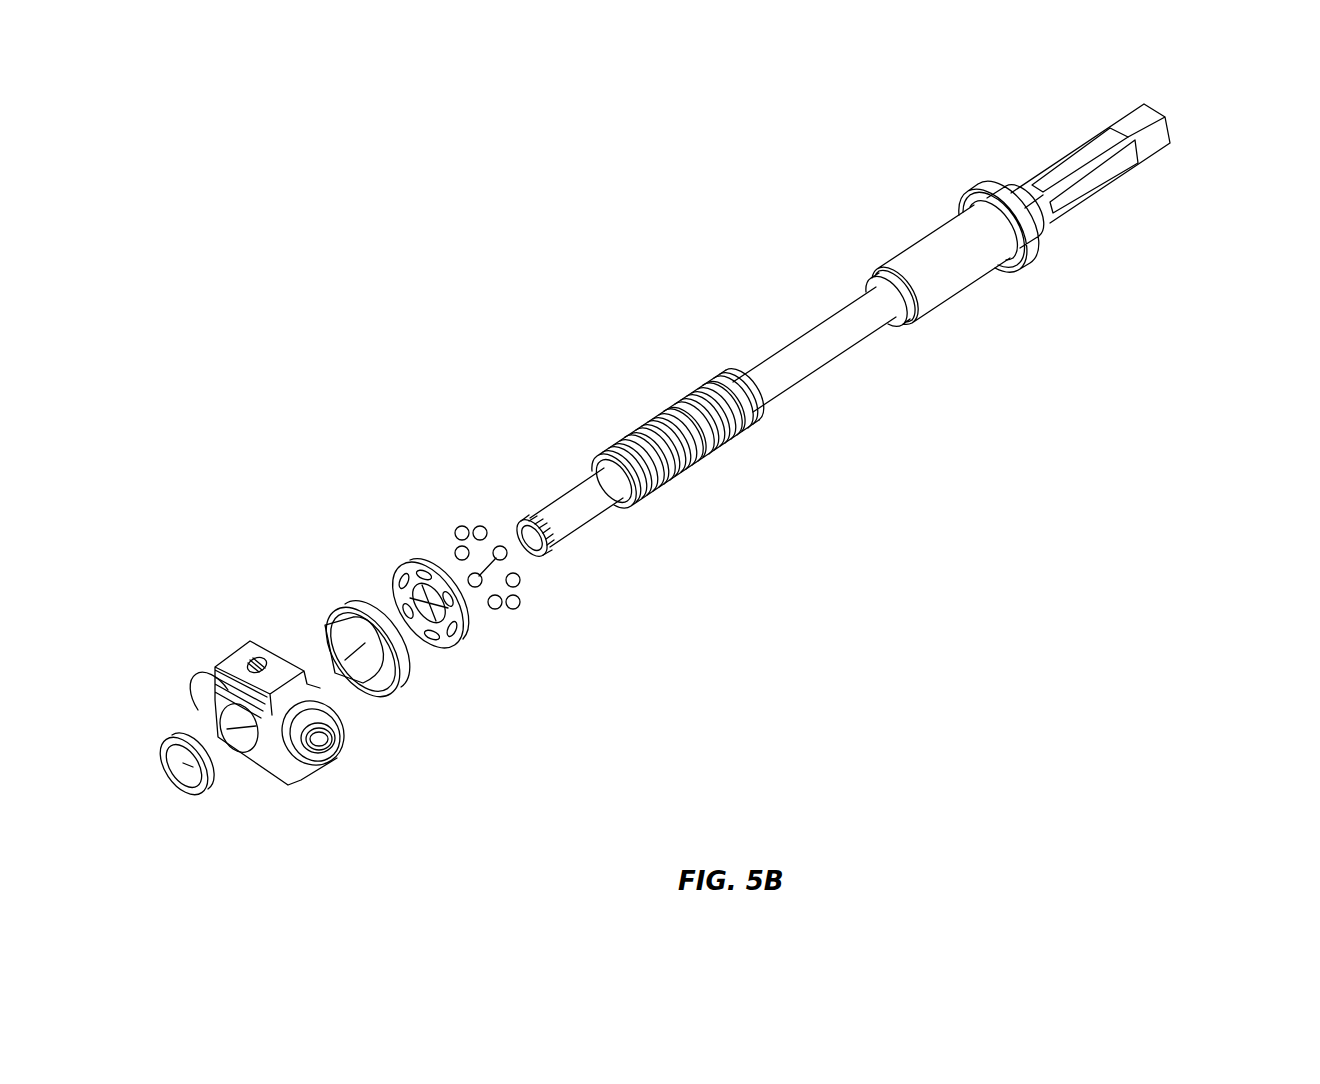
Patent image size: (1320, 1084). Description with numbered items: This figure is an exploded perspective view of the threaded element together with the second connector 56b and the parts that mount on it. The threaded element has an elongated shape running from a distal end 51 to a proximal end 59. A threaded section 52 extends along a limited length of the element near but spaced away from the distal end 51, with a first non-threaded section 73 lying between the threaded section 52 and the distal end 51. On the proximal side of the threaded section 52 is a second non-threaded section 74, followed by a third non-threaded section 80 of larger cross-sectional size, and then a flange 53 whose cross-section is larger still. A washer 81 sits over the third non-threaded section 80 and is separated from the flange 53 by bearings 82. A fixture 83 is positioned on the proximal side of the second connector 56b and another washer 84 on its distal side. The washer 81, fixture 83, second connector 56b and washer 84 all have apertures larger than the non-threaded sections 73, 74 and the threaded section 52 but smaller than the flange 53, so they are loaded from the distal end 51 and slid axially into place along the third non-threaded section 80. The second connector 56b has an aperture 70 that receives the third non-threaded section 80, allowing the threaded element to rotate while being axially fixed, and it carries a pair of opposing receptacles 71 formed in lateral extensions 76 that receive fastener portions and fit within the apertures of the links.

The distal end 51 is at (530, 548).
The threaded section 52 is at (650, 428).
The flange 53 is at (1035, 262).
The second connector 56b is at (293, 690).
The proximal end 59 is at (1172, 128).
The aperture 70 is at (245, 750).
The receptacles 71 is at (337, 745).
The first non-threaded section 73 is at (583, 510).
The second non-threaded section 74 is at (803, 370).
The lateral extensions 76 is at (200, 690).
The third non-threaded section 80 is at (945, 258).
The washer 81 is at (470, 627).
The bearings 82 is at (456, 528).
The fixture 83 is at (355, 600).
The washer 84 is at (213, 796).